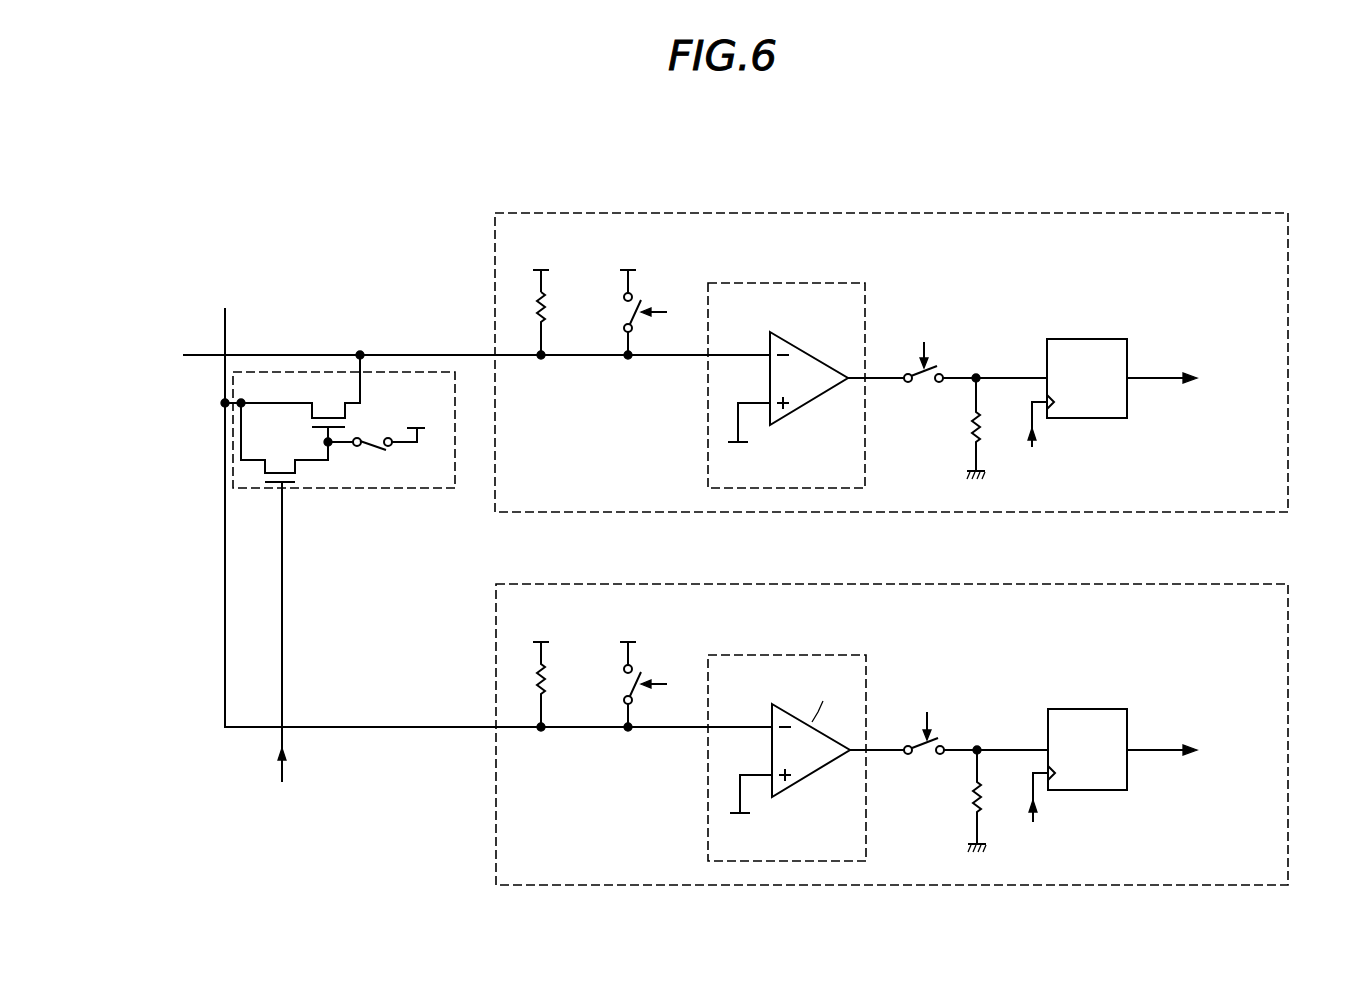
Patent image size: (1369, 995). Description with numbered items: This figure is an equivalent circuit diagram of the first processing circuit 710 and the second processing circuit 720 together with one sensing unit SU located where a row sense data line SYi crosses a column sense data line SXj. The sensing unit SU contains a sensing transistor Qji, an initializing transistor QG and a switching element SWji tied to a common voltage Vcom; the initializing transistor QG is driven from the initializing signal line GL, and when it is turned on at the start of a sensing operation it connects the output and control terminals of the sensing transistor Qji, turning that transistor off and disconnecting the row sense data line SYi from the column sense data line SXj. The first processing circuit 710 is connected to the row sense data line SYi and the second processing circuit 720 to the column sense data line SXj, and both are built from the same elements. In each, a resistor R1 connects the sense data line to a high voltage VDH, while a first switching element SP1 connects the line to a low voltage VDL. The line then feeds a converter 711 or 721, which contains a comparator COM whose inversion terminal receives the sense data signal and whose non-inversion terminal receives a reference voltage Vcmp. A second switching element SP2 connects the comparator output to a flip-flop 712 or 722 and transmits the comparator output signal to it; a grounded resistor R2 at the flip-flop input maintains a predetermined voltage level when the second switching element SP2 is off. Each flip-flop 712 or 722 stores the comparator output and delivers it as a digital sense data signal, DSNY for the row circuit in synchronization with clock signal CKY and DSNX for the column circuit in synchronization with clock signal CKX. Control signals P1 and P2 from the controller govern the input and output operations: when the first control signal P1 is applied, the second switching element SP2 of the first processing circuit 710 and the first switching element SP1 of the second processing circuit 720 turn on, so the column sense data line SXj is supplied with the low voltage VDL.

The first processing circuit 710 is at (1288, 322).
The converter 711 is at (783, 283).
The flip-flop 712 is at (1088, 339).
The second processing circuit 720 is at (925, 734).
The converter 721 is at (787, 735).
The flip-flop 722 is at (1087, 727).
The sensing unit SU is at (343, 489).
The comparator COM is at (812, 350).
The sensing transistor Qji is at (292, 398).
The initializing transistor QG is at (284, 451).
The switching element SWji is at (374, 459).
The resistor R1 is at (530, 323).
The resistor R2 is at (961, 428).
The first switching element SP1 is at (610, 324).
The second switching element SP2 is at (923, 392).
The column sense data line SXj is at (490, 499).
The row sense data line SYi is at (458, 359).
The initializing signal line GL is at (281, 660).
The common voltage Vcom is at (415, 417).
The reference voltage Vcmp is at (740, 440).
The high voltage VDH is at (540, 263).
The low voltage VDL is at (627, 263).
The first control signal P1 is at (925, 340).
The second control signal P2 is at (667, 313).
The clock signal CKY is at (1037, 446).
The clock signal CKX is at (1039, 818).
The row digital sense data signal DSNY is at (1192, 378).
The column digital sense data signal DSNX is at (1194, 751).